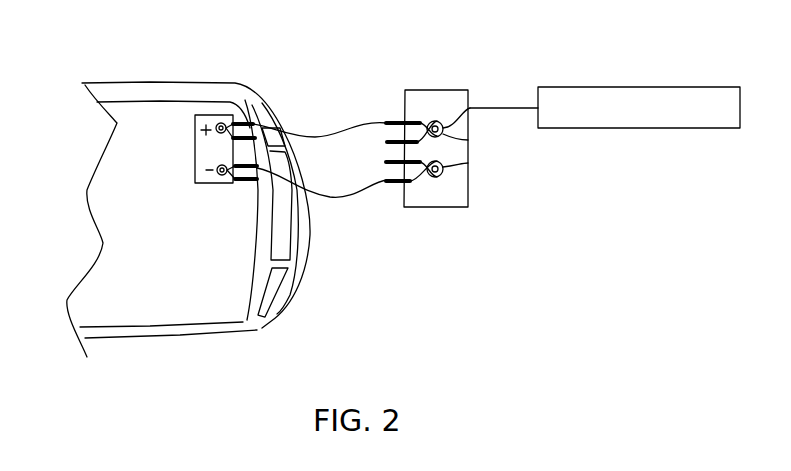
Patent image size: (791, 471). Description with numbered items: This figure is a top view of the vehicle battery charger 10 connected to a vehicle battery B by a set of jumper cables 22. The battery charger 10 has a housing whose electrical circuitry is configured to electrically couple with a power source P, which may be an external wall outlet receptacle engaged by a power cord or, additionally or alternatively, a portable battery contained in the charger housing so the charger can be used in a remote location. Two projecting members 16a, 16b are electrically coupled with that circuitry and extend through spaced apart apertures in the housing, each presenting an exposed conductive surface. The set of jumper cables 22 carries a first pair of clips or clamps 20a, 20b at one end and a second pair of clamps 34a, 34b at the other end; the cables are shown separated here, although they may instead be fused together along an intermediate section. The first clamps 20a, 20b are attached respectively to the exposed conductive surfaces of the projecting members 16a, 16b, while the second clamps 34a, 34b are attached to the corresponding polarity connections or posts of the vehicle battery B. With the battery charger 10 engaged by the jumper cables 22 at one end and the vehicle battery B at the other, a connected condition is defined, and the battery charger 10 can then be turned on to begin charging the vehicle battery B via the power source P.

The vehicle battery charger 10 is at (458, 114).
The projecting member 16a is at (470, 137).
The projecting member 16b is at (470, 165).
The clamp 20a is at (393, 122).
The clamp 20b is at (393, 182).
The jumper cables 22 is at (351, 157).
The clamp 34a is at (256, 98).
The clamp 34b is at (250, 182).
The vehicle battery B is at (193, 147).
The power source P is at (620, 86).